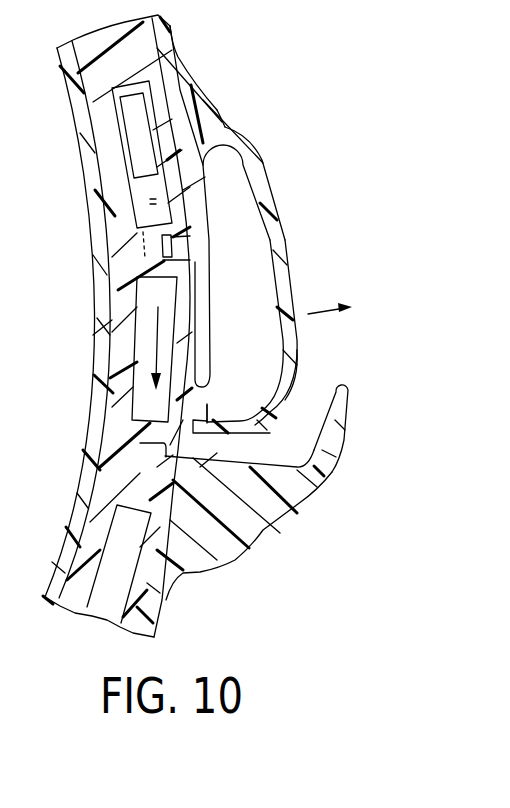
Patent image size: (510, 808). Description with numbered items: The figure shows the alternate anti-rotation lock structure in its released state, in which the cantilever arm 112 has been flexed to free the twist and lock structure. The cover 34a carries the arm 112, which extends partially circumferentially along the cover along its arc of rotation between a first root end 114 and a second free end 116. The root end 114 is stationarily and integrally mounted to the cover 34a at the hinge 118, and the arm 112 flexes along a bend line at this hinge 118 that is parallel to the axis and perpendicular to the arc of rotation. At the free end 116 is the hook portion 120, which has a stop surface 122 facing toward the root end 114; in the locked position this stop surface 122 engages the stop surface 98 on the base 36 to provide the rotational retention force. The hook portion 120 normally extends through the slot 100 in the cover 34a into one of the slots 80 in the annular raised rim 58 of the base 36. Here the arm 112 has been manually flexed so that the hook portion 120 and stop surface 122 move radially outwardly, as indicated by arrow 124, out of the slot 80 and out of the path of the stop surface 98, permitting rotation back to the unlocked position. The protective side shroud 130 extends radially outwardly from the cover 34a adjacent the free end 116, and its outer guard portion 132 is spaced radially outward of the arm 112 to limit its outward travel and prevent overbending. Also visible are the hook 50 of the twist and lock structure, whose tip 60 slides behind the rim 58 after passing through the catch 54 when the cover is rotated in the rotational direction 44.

The cover 34a is at (175, 47).
The hinge 118 is at (223, 130).
The first root end 114 is at (262, 153).
The cantilever arm 112 is at (284, 234).
The arrow 124 is at (316, 313).
The second free end 116 is at (302, 388).
The slot 100 is at (200, 385).
The stop surface 122 is at (209, 411).
The hook portion 120 is at (243, 428).
The outer guard portion 132 is at (346, 405).
The protective side shroud 130 is at (263, 530).
The base 36 is at (132, 610).
The hook 50 is at (137, 138).
The catch 54 is at (148, 176).
The tip 60 is at (147, 212).
The first rotational direction 44 is at (137, 340).
The annular raised rim 58 is at (137, 428).
The stop surface 98 is at (150, 456).
The slot 80 is at (150, 474).